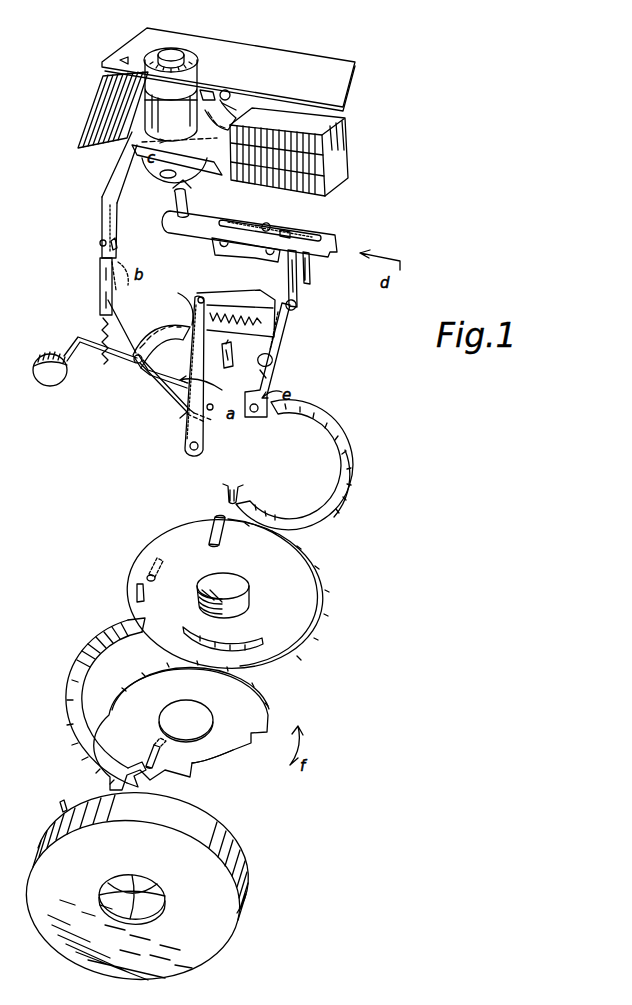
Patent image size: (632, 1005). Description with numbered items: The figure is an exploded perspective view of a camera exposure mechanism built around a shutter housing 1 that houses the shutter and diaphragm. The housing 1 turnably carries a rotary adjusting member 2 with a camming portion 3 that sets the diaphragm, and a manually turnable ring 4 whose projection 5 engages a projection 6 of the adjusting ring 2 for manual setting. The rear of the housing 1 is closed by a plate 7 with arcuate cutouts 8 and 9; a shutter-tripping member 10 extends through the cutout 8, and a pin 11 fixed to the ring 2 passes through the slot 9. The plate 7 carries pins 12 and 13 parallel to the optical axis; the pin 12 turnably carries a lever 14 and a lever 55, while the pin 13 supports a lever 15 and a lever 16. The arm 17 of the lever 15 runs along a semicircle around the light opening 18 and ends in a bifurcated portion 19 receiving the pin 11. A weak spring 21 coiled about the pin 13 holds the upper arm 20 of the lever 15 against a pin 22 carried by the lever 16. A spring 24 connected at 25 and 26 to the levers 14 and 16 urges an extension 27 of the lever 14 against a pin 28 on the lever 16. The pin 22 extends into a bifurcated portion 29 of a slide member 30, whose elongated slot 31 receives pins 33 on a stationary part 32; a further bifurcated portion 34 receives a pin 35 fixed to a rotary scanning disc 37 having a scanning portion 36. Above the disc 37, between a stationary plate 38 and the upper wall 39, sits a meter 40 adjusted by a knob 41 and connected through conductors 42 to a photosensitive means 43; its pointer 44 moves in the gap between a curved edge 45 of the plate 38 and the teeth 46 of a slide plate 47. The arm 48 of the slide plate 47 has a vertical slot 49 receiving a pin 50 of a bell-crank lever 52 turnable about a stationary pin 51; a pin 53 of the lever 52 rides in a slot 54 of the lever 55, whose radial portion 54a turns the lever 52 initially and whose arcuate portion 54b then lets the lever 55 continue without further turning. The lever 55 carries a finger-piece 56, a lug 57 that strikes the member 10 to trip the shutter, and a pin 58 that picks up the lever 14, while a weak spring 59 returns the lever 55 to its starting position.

The shutter housing 1 is at (218, 893).
The rotary adjusting member 2 is at (181, 727).
The camming portion 3 is at (239, 757).
The manually turnable ring 4 is at (70, 707).
The projection 5 is at (124, 768).
The projection 6 is at (150, 771).
The plate 7 is at (301, 592).
The arcuate cutout 8 is at (135, 588).
The arcuate cutout 9 is at (263, 643).
The shutter-tripping member 10 is at (62, 803).
The pin 11 is at (163, 744).
The pin 12 is at (150, 560).
The pin 13 is at (217, 518).
The lever 14 is at (204, 354).
The lever 15 is at (301, 420).
The lever 16 is at (268, 340).
The arm 17 is at (352, 462).
The opening 18 is at (244, 582).
The bifurcated portion 19 is at (226, 490).
The upper arm 20 is at (272, 360).
The spring 21 is at (264, 372).
The pin 22 is at (297, 293).
The spring 24 is at (232, 313).
The connection point 25 is at (202, 297).
The connection point 26 is at (276, 337).
The extension 27 is at (258, 306).
The pin 28 is at (296, 313).
The bifurcated portion 29 is at (310, 271).
The slide member 30 is at (203, 227).
The elongated slot 31 is at (287, 230).
The stationary part 32 is at (228, 236).
The pins 33 is at (267, 225).
The bifurcated portion 34 is at (175, 204).
The pin 35 is at (189, 199).
The scanning portion 36 is at (206, 152).
The rotary scanning disc 37 is at (158, 181).
The stationary plate 38 is at (80, 135).
The upper wall 39 is at (300, 67).
The meter 40 is at (157, 110).
The knob 41 is at (172, 52).
The electrical conductors 42 is at (228, 92).
The photosensitive means 43 is at (312, 167).
The pointer 44 is at (208, 90).
The curved edge 45 is at (238, 110).
The teeth 46 is at (196, 126).
The slide plate 47 is at (110, 160).
The arm 48 is at (104, 213).
The vertical slot 49 is at (100, 243).
The pin 50 is at (117, 245).
The stationary pin 51 is at (116, 284).
The lever 52 is at (102, 283).
The pin 53 is at (137, 363).
The slot 54 is at (170, 328).
The slot portion 54a is at (140, 363).
The arcuate slot portion 54b is at (172, 299).
The lever 55 is at (113, 363).
The finger-piece 56 is at (49, 384).
The lug 57 is at (178, 412).
The pin 58 is at (221, 350).
The spring 59 is at (101, 322).